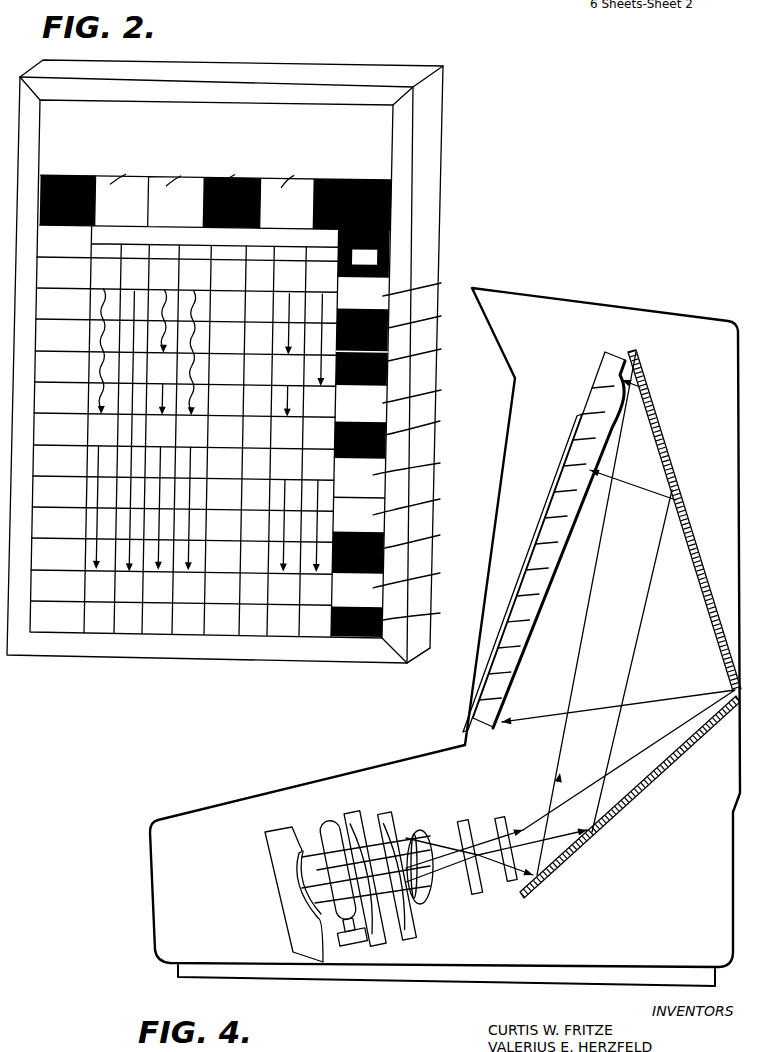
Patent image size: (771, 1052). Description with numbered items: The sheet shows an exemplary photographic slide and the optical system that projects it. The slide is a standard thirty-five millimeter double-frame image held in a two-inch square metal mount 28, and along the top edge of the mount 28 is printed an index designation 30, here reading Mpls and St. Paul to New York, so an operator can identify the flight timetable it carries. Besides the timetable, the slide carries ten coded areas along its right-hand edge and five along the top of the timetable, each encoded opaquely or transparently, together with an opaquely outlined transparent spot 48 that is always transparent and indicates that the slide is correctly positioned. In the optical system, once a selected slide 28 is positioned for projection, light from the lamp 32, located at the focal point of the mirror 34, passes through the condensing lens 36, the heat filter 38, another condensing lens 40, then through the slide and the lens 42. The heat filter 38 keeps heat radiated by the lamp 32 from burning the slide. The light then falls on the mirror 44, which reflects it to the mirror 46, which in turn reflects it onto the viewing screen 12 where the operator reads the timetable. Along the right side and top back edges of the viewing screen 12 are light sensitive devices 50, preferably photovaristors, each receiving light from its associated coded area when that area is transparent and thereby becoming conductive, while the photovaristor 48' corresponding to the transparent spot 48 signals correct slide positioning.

In FIG. 2, the index designation 30 is at (385, 80).
In FIG. 2, the metal mount 28 is at (437, 212).
In FIG. 4, the metal mount 28 is at (463, 822).
In FIG. 2, the transparent spot 48 is at (404, 433).
In FIG. 4, the photovaristor 48' is at (549, 539).
In FIG. 4, the light sensitive devices 50 is at (589, 436).
In FIG. 4, the viewing screen 12 is at (558, 483).
In FIG. 4, the mirror 46 is at (700, 574).
In FIG. 4, the mirror 44 is at (612, 814).
In FIG. 4, the mirror 34 is at (300, 885).
In FIG. 4, the lamp 32 is at (330, 822).
In FIG. 4, the condensing lens 36 is at (365, 815).
In FIG. 4, the heat filter 38 is at (388, 815).
In FIG. 4, the lens 42 is at (503, 820).
In FIG. 4, the condensing lens 40 is at (430, 898).